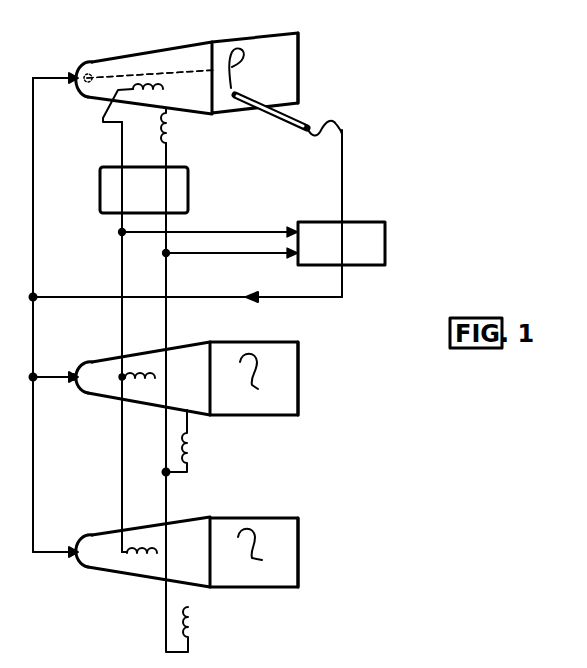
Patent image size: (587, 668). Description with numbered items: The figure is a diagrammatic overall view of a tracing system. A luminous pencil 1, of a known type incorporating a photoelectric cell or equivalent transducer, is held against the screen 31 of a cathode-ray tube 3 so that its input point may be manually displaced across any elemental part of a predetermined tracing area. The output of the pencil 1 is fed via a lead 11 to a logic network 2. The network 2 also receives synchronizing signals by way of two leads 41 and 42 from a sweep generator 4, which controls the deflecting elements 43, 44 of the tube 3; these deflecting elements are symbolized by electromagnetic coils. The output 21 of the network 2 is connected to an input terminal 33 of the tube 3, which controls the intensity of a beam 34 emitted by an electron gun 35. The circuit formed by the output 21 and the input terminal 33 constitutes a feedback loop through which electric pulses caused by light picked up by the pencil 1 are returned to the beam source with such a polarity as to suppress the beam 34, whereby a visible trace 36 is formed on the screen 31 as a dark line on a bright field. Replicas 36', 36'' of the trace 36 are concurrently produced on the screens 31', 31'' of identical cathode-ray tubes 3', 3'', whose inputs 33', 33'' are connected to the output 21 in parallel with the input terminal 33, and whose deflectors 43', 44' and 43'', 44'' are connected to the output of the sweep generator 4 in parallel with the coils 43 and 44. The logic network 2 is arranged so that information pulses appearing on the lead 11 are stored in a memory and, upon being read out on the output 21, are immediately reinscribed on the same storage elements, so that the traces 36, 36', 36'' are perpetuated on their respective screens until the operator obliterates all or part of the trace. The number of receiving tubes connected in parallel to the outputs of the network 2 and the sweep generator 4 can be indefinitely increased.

The luminous pencil 1 is at (297, 116).
The logic network 2 is at (385, 228).
The cathode-ray tube 3 is at (187, 64).
The cathode-ray tube 3' is at (187, 358).
The cathode-ray tube 3'' is at (187, 532).
The sweep generator 4 is at (188, 178).
The lead 11 is at (342, 130).
The output 21 is at (63, 296).
The screen 31 is at (316, 68).
The screen 31' is at (321, 378).
The screen 31'' is at (324, 552).
The input terminal 33 is at (58, 102).
The input 33' is at (58, 400).
The input 33'' is at (59, 573).
The beam 34 is at (185, 72).
The electron gun 35 is at (88, 73).
The visible trace 36 is at (259, 68).
The replica of trace 36' is at (268, 376).
The replica of trace 36'' is at (269, 550).
The lead 41 is at (222, 232).
The lead 42 is at (223, 255).
The deflecting element 43 is at (188, 130).
The deflector 43' is at (209, 438).
The deflector 43'' is at (211, 623).
The deflecting element 44 is at (155, 101).
The deflector 44' is at (139, 409).
The deflector 44'' is at (134, 577).